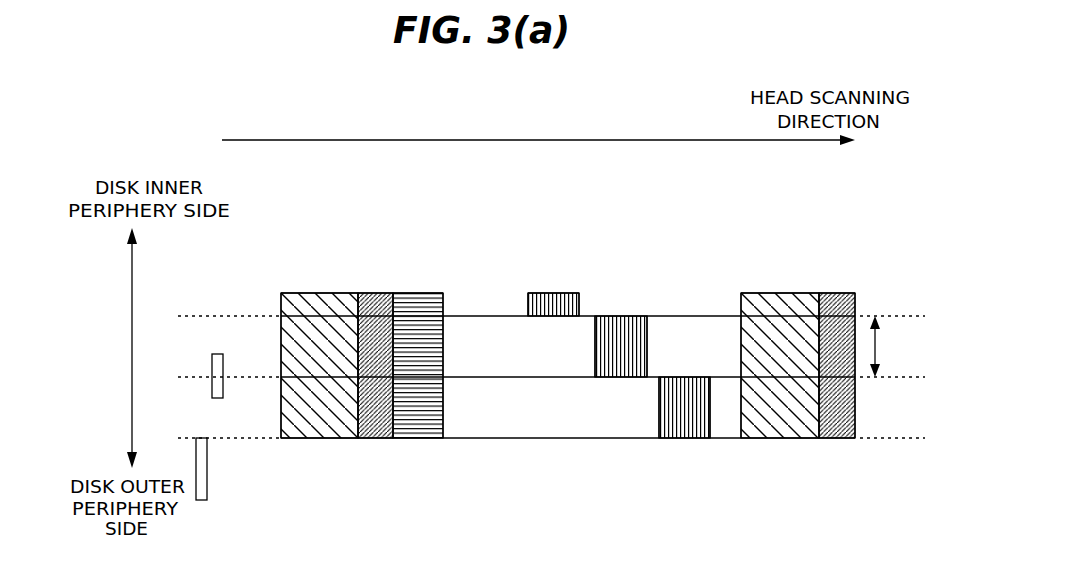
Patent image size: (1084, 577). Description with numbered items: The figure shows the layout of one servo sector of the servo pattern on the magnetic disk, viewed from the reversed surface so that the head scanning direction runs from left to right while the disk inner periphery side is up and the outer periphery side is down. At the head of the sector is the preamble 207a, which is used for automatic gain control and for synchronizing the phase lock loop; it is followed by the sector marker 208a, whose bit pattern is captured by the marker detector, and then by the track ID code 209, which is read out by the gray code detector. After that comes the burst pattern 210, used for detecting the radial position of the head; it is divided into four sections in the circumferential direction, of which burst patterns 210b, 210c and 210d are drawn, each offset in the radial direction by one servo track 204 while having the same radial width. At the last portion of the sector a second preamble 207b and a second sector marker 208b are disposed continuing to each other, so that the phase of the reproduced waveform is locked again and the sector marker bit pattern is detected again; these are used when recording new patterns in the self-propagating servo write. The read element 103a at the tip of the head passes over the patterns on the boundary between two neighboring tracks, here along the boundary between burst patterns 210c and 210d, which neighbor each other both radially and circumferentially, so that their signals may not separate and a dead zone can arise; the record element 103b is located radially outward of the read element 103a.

The read element 103a is at (220, 353).
The record element 103b is at (207, 465).
The servo track width 204 is at (896, 346).
The preamble 207a is at (315, 297).
The second preamble 207b is at (772, 297).
The sector marker 208a is at (375, 297).
The second sector marker 208b is at (838, 297).
The track ID code 209 is at (430, 297).
The burst pattern 210 is at (730, 222).
The burst pattern section B 210b is at (556, 297).
The burst pattern section C 210c is at (623, 322).
The burst pattern section D 210d is at (687, 380).